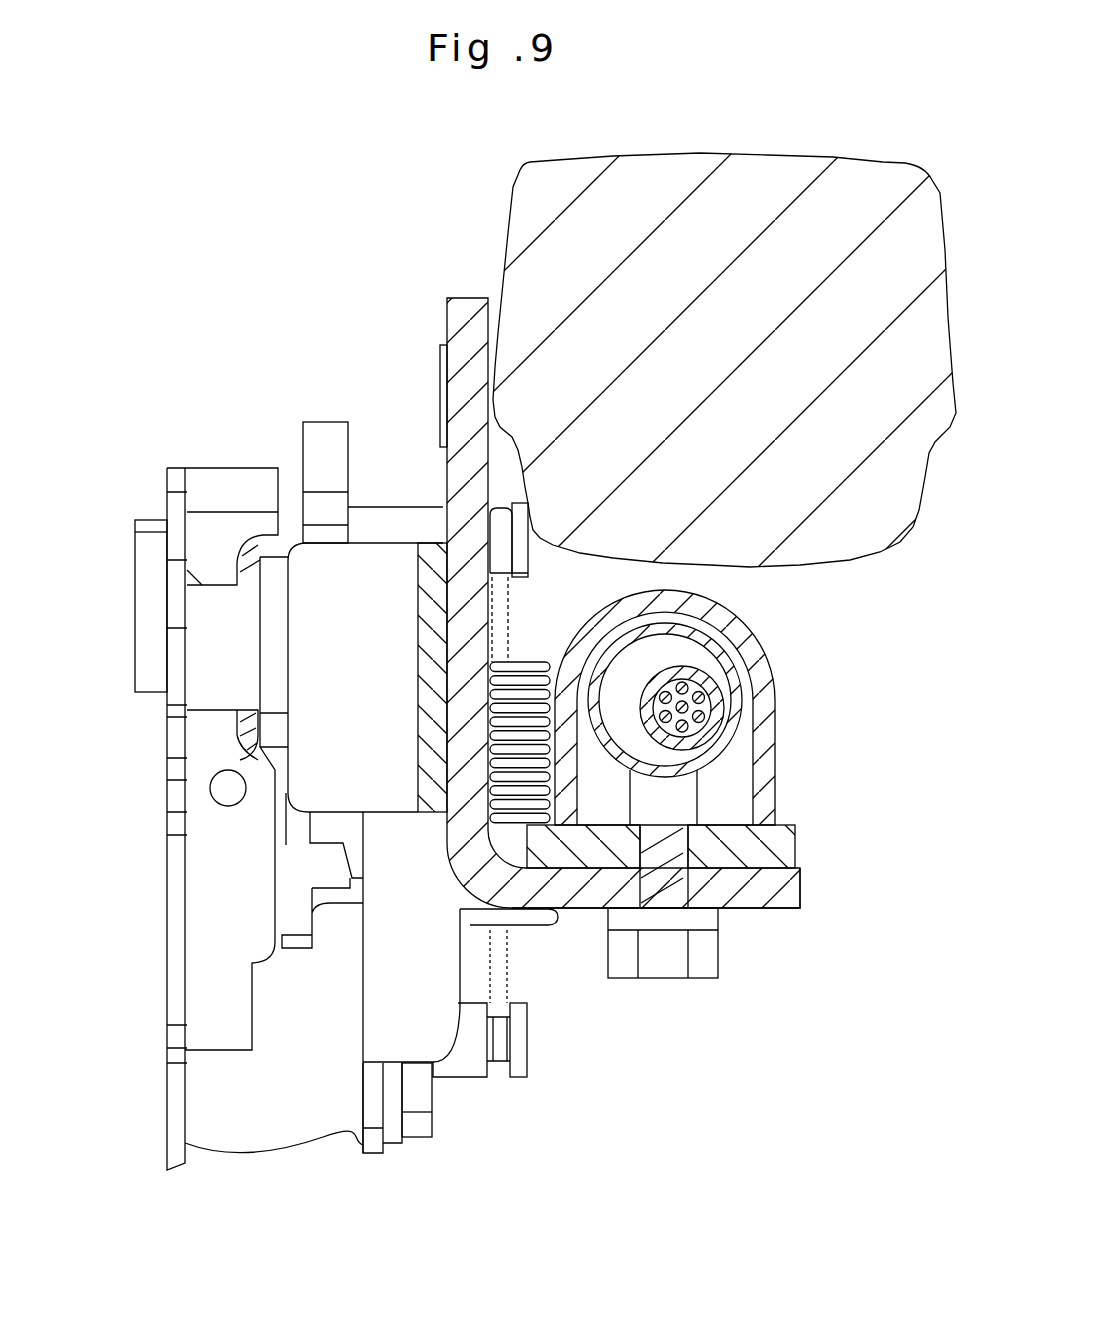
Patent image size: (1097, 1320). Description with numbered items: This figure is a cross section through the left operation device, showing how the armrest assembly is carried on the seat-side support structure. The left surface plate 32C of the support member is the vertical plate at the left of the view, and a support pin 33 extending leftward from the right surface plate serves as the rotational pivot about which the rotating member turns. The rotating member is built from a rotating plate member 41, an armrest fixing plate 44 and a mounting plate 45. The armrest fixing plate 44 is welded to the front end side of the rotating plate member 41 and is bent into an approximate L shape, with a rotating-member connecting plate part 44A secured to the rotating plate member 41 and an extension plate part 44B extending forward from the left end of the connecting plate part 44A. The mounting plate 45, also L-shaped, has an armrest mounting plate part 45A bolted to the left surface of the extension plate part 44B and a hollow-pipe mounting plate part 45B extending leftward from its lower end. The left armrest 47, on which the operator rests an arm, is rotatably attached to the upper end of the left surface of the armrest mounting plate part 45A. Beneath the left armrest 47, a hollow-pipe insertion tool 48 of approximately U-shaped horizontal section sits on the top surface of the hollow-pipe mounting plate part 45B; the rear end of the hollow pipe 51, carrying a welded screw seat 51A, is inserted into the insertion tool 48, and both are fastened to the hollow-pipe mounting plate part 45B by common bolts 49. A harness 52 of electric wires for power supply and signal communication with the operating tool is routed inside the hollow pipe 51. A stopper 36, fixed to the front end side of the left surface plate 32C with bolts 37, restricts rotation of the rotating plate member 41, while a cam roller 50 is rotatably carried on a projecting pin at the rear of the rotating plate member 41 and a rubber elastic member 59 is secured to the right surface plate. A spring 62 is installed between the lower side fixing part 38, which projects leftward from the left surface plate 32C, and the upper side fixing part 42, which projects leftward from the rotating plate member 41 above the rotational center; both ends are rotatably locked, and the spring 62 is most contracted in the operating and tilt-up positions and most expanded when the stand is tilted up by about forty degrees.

The left surface plate 32C is at (178, 930).
The support pin 33 is at (230, 643).
The stopper 36 is at (423, 1013).
The bolts 37 is at (417, 1097).
The lower side fixing part 38 is at (528, 1042).
The rotating plate member 41 is at (323, 463).
The upper side fixing part 42 is at (525, 540).
The armrest fixing plate 44 is at (387, 597).
The rotating-member connecting plate part 44A is at (353, 787).
The extension plate part 44B is at (432, 672).
The mounting plate 45 is at (577, 885).
The armrest mounting plate part 45A is at (462, 373).
The hollow-pipe mounting plate part 45B is at (733, 890).
The left armrest 47 is at (722, 247).
The hollow-pipe insertion tool 48 is at (762, 737).
The bolts 49 is at (663, 975).
The cam roller 50 is at (232, 573).
The hollow pipe 51 is at (722, 650).
The screw seat 51A is at (665, 797).
The harness 52 is at (722, 700).
The elastic member 59 is at (240, 718).
The spring 62 is at (522, 690).